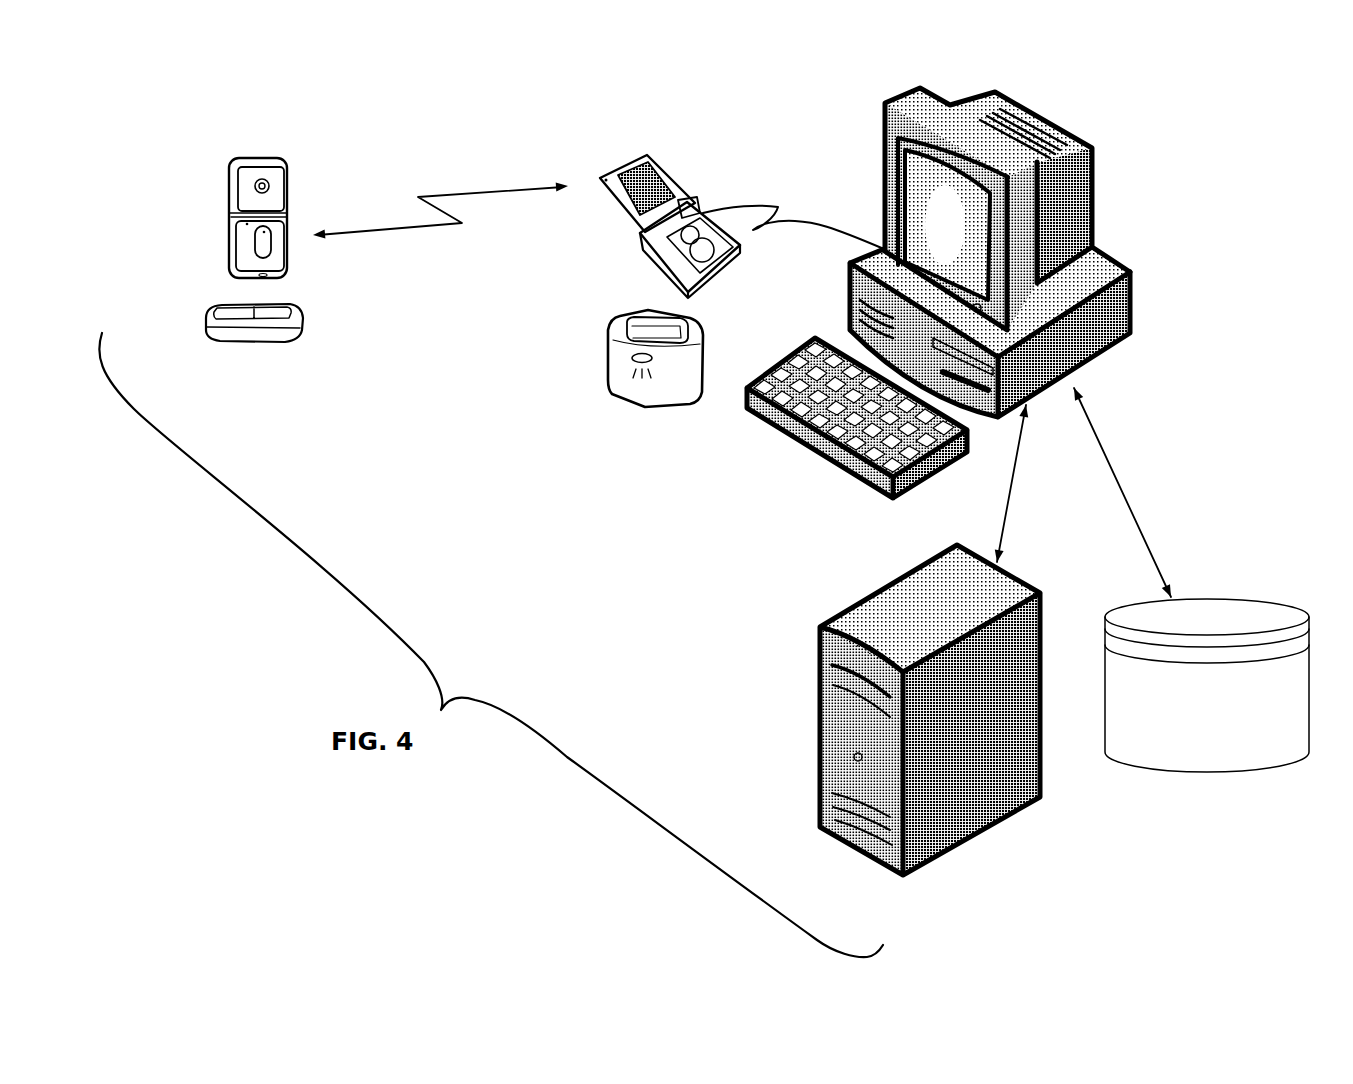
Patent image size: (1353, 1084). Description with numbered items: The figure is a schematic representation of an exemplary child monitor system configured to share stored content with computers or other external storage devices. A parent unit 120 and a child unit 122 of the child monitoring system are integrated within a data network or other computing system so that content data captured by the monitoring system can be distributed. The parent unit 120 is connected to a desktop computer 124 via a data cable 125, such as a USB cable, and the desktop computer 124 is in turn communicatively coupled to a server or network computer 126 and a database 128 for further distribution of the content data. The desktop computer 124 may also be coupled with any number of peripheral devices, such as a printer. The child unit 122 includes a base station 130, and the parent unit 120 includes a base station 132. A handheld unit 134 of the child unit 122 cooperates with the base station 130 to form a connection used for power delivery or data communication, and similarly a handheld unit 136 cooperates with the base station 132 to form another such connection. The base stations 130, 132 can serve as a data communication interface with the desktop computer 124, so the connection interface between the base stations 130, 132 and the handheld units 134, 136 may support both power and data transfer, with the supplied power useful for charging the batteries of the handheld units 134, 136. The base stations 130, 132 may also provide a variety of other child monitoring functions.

The parent unit 120 is at (649, 150).
The child unit 122 is at (270, 152).
The desktop computer 124 is at (1050, 125).
The data cable 125 is at (747, 206).
The server or network computer 126 is at (960, 847).
The database 128 is at (1160, 773).
The base station 130 is at (252, 341).
The base station 132 is at (635, 383).
The handheld unit 134 is at (232, 238).
The handheld unit 136 is at (645, 258).